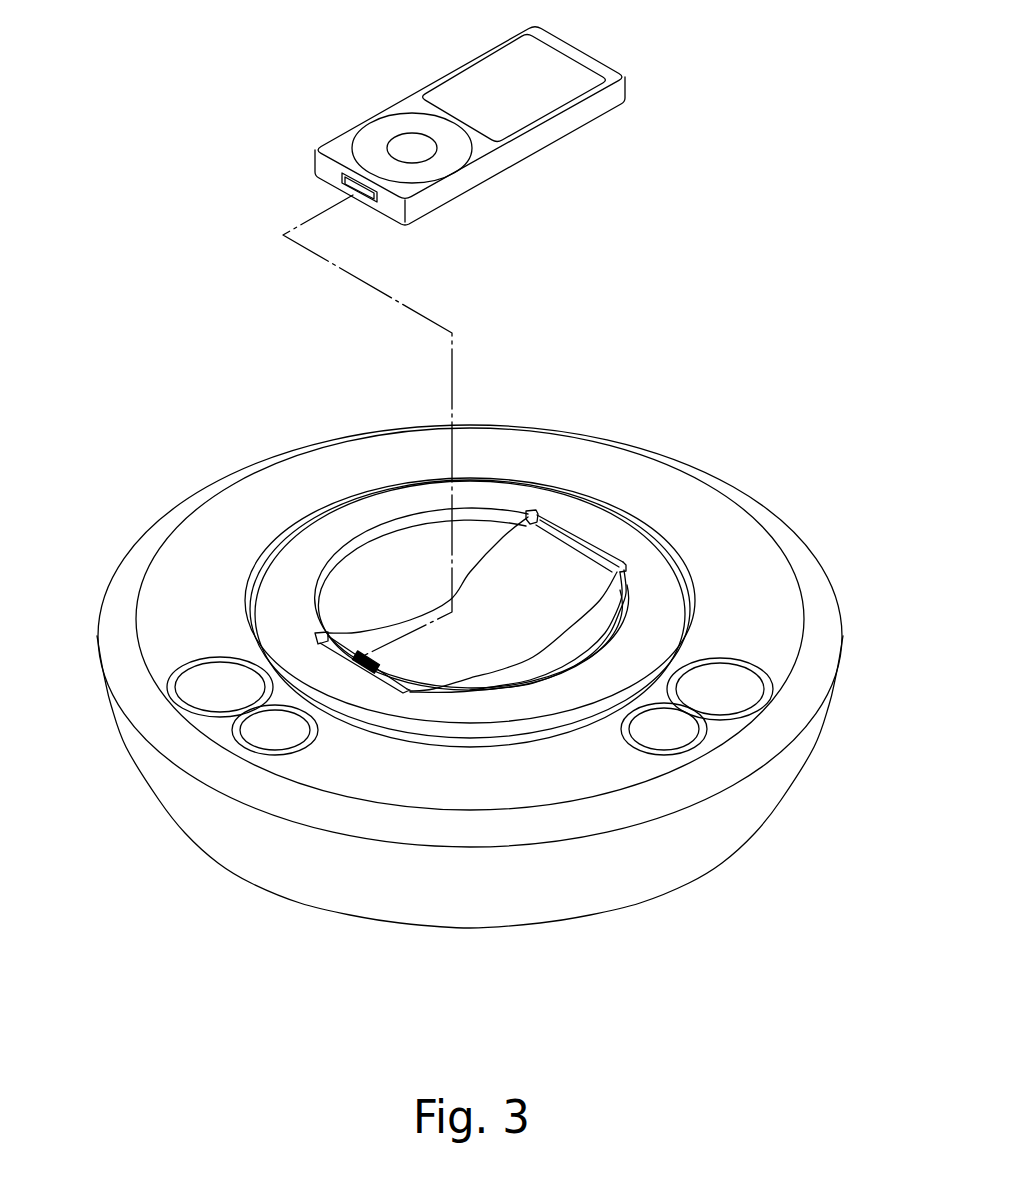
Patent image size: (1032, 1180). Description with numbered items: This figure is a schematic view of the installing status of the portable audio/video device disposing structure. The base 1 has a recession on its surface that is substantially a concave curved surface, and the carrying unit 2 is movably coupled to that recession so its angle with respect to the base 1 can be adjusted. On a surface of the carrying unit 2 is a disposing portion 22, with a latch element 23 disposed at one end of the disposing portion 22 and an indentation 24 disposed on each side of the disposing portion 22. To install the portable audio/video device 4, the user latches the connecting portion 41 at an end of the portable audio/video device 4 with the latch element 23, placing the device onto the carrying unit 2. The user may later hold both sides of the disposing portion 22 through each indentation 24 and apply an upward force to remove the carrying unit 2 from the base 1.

The base 1 is at (725, 833).
The carrying unit 2 is at (652, 488).
The disposing portion 22 is at (543, 590).
The latch element 23 is at (360, 660).
The indentation 24 is at (408, 540).
The portable audio/video device 4 is at (456, 126).
The connector slot 41 is at (350, 186).